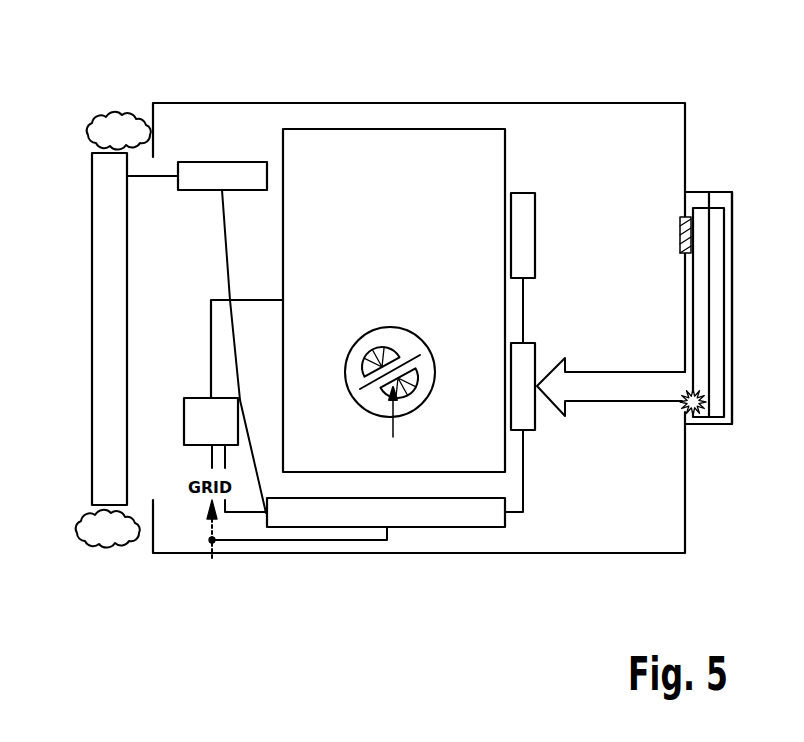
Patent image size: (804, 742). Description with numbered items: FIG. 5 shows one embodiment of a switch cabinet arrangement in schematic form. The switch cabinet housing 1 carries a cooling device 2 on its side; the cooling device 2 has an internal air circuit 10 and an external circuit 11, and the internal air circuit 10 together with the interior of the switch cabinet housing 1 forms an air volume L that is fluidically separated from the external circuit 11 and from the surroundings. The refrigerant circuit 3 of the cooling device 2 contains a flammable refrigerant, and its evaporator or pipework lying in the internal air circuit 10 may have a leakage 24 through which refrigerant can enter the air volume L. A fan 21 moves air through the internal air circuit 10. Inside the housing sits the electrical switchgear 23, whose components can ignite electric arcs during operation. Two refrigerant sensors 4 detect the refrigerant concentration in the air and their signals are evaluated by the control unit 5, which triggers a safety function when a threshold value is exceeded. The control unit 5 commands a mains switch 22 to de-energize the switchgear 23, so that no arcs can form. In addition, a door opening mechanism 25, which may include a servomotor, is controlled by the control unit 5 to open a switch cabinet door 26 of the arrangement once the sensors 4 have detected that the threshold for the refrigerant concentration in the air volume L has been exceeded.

The switch cabinet housing 1 is at (553, 103).
The cooling device 2 is at (732, 192).
The refrigerant circuit 3 is at (724, 277).
The refrigerant sensors 4 is at (511, 233).
The control unit 5 is at (467, 510).
The internal air circuit 10 is at (698, 200).
The external circuit 11 is at (732, 317).
The fan 21 is at (683, 222).
The mains switch 22 is at (192, 410).
The electrical switchgear 23 is at (391, 158).
The leakage 24 is at (706, 401).
The door opening mechanism 25 is at (218, 178).
The switch cabinet door 26 is at (92, 328).
The air volume L is at (260, 135).